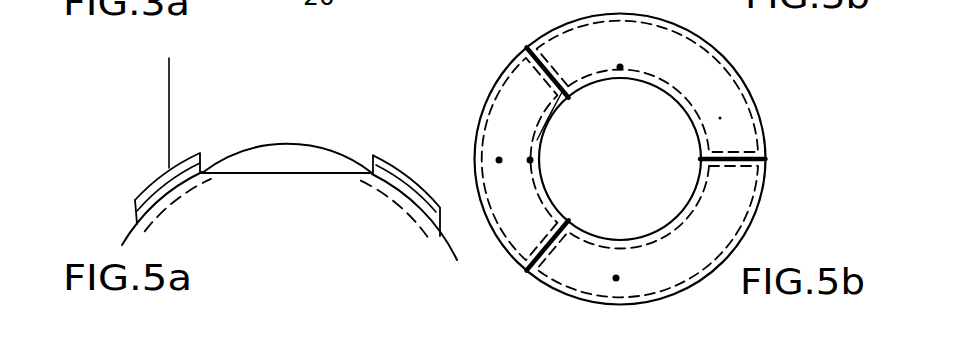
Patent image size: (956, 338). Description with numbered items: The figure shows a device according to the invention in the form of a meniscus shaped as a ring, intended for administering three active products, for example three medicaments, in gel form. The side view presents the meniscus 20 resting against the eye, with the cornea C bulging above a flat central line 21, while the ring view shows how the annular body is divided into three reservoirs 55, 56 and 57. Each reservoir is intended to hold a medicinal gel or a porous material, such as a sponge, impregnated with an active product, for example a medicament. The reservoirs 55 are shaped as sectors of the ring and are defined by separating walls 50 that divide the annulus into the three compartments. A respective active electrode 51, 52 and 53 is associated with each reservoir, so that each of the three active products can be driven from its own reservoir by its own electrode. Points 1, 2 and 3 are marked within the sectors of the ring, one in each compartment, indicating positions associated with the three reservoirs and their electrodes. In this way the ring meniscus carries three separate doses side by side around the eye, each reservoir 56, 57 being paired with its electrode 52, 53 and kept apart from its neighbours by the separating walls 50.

In FIG. 5A, the contact lens 20 is at (273, 227).
In FIG. 5A, the flat central zone line 21 is at (255, 176).
In FIG. 5A, the cornea C is at (291, 144).
In FIG. 5A, the reservoir 55 is at (195, 159).
In FIG. 5B, the reservoir 55 is at (582, 49).
In FIG. 5B, the radial divider rib 50 is at (551, 120).
In FIG. 5B, the active electrode 51 is at (518, 68).
In FIG. 5B, the active electrode 52 is at (672, 26).
In FIG. 5B, the active electrode 53 is at (553, 283).
In FIG. 5B, the reservoir 56 is at (702, 66).
In FIG. 5B, the reservoir 57 is at (719, 232).
In FIG. 5B, the measurement point 1 is at (515, 158).
In FIG. 5B, the measurement point 2 is at (622, 52).
In FIG. 5B, the measurement point 3 is at (619, 265).